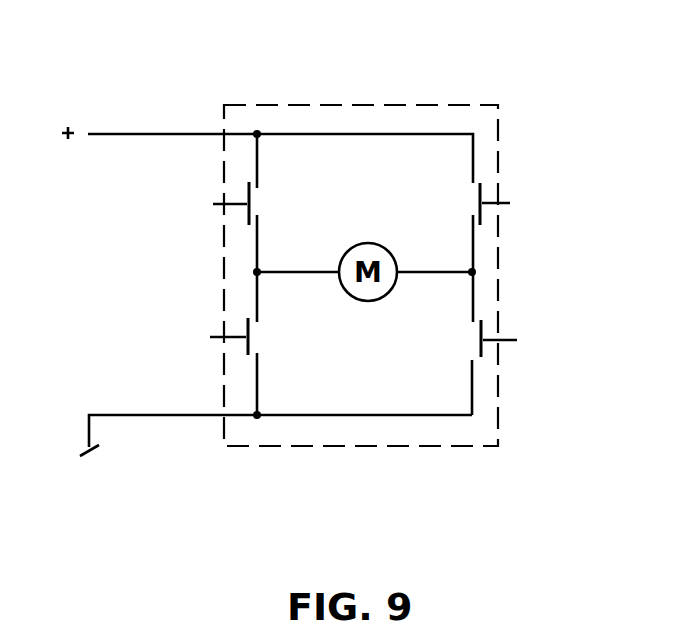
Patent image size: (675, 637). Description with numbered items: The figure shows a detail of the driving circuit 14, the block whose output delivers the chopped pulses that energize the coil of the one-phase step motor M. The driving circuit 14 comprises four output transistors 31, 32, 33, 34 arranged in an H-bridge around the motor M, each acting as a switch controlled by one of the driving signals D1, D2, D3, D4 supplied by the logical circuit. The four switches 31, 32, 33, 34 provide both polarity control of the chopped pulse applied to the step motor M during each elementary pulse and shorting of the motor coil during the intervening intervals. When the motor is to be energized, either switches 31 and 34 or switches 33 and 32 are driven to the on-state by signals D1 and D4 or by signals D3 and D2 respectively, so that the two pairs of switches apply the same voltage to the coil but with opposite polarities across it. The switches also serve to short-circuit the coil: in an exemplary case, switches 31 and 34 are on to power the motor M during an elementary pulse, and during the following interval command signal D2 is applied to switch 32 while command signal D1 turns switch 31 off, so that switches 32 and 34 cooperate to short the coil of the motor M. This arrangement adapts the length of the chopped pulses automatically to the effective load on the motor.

The driving circuit 14 is at (407, 104).
The output transistor 31 is at (246, 191).
The output transistor 32 is at (245, 347).
The output transistor 33 is at (482, 192).
The output transistor 34 is at (485, 349).
The driving signal D1 is at (213, 203).
The driving signal D2 is at (211, 336).
The driving signal D3 is at (518, 204).
The driving signal D4 is at (520, 338).